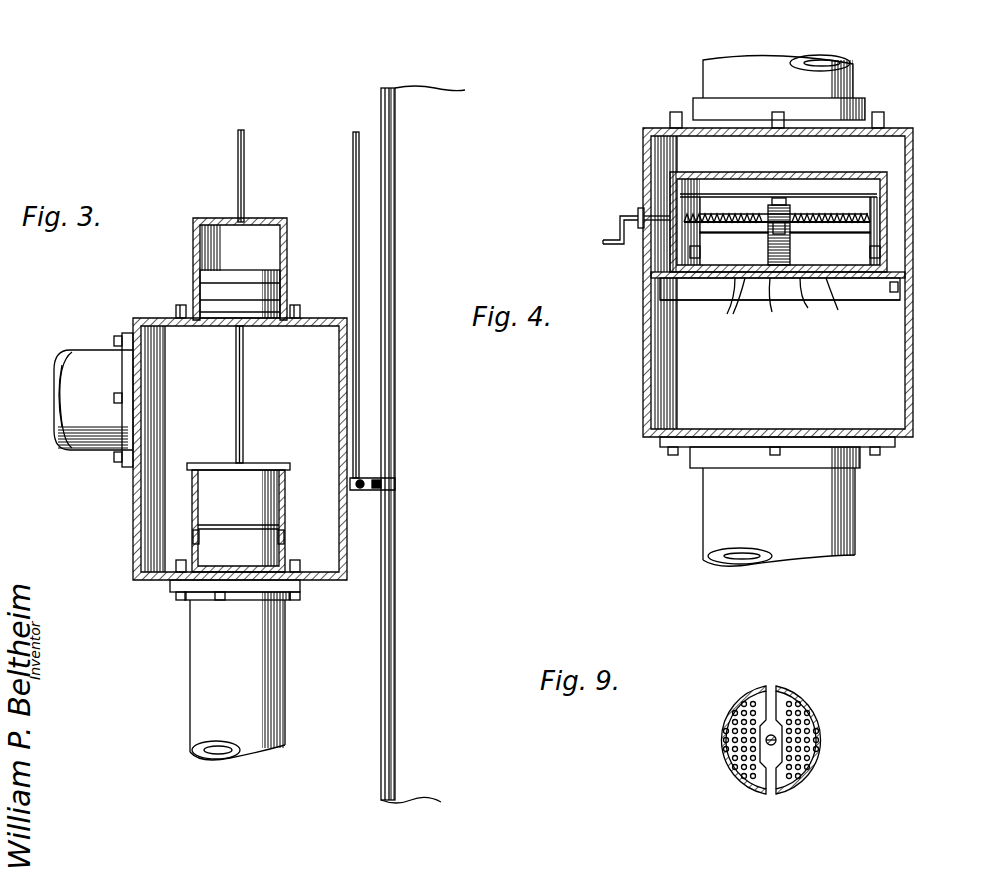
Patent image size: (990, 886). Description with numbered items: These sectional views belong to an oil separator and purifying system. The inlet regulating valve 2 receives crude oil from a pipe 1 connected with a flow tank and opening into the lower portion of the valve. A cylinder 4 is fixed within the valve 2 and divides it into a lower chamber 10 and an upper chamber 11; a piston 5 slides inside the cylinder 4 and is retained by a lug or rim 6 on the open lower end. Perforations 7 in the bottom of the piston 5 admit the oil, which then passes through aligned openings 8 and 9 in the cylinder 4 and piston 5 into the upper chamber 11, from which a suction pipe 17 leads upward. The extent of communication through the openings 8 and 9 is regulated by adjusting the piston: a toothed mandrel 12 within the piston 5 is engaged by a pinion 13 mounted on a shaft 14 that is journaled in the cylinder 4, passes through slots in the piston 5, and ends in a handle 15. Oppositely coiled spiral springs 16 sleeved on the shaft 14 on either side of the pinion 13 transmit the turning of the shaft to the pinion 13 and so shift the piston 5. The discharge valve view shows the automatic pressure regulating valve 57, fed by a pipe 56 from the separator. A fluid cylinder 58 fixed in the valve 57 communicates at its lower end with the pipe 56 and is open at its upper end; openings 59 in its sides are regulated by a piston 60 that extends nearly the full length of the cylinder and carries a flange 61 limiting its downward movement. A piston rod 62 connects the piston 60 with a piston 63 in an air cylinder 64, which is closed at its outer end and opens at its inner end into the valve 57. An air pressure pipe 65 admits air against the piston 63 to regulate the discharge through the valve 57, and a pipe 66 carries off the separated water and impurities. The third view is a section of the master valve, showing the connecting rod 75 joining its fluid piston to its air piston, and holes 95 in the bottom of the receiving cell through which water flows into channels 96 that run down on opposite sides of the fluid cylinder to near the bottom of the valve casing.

In FIG. 4, the pipe 1 is at (720, 516).
In FIG. 4, the inlet regulating valve 2 is at (913, 315).
In FIG. 4, the cylinder 4 is at (887, 190).
In FIG. 4, the piston 5 is at (842, 214).
In FIG. 4, the lug or rim 6 is at (845, 278).
In FIG. 4, the perforations 7 is at (779, 306).
In FIG. 4, the opening 8 is at (700, 252).
In FIG. 4, the opening 9 is at (765, 248).
In FIG. 4, the lower chamber 10 is at (660, 386).
In FIG. 4, the upper chamber 11 is at (665, 160).
In FIG. 4, the mandrel 12 is at (771, 307).
In FIG. 4, the pinion 13 is at (786, 210).
In FIG. 4, the shaft 14 is at (766, 218).
In FIG. 4, the handle 15 is at (620, 232).
In FIG. 4, the spiral springs 16 is at (772, 215).
In FIG. 4, the suction pipe 17 is at (853, 82).
In FIG. 3, the pipe 56 is at (212, 670).
In FIG. 3, the automatic pressure regulating valve 57 is at (133, 516).
In FIG. 3, the fluid cylinder 58 is at (285, 500).
In FIG. 3, the openings 59 is at (195, 546).
In FIG. 3, the piston 60 is at (270, 463).
In FIG. 3, the flange 61 is at (238, 482).
In FIG. 3, the piston rod 62 is at (243, 395).
In FIG. 3, the piston 63 is at (265, 292).
In FIG. 3, the air cylinder 64 is at (287, 240).
In FIG. 3, the air pressure pipe 65 is at (244, 168).
In FIG. 3, the pipe 66 is at (85, 366).
In FIG. 9, the connecting rod 75 is at (778, 740).
In FIG. 9, the holes 95 is at (735, 713).
In FIG. 9, the channels 96 is at (826, 730).